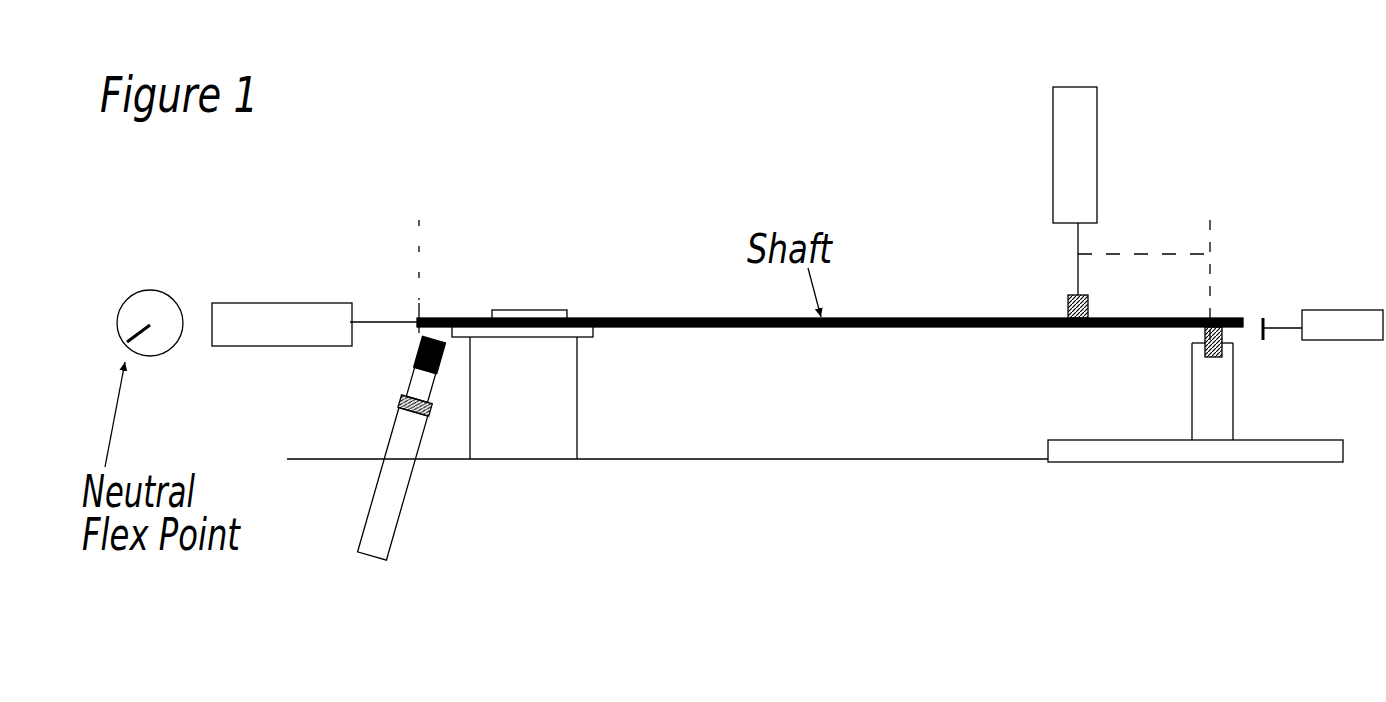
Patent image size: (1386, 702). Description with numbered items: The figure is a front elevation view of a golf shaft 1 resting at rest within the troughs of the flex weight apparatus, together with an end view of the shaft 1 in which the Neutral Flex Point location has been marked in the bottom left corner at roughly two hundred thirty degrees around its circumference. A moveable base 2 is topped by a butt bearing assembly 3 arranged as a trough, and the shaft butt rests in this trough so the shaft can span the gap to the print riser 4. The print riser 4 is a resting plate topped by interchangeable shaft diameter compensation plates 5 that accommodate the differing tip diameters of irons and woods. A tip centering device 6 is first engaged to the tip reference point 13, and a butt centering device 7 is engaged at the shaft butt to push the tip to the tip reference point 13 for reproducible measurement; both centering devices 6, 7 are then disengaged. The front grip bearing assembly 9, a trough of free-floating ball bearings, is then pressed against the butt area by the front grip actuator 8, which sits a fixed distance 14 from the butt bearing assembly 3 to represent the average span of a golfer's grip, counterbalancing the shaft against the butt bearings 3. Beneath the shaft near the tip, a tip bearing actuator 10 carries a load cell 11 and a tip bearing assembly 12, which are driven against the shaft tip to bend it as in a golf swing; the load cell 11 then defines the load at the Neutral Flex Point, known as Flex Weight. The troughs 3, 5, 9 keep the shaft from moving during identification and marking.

The golf shaft 1 is at (148, 362).
The moveable base 2 is at (1182, 468).
The butt bearing assembly 3 is at (1196, 343).
The print riser 4 is at (512, 466).
The shaft diameter compensation plates 5 is at (508, 309).
The tip centering device 6 is at (293, 301).
The butt centering device 7 is at (1336, 309).
The front grip actuator 8 is at (1051, 157).
The front grip bearing assembly 9 is at (1066, 296).
The tip bearing actuator 10 is at (362, 500).
The load cell 11 is at (398, 398).
The tip bearing assembly 12 is at (417, 353).
The tip reference point 13 is at (401, 230).
The fixed distance 14 is at (1212, 247).